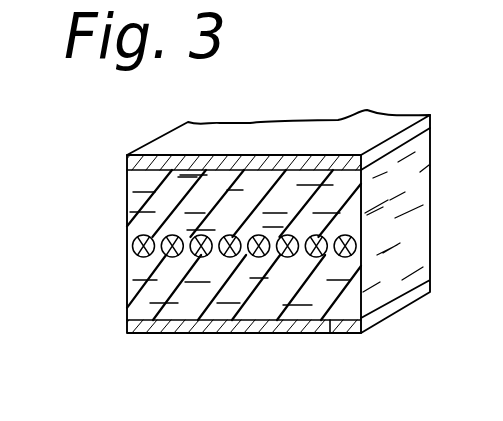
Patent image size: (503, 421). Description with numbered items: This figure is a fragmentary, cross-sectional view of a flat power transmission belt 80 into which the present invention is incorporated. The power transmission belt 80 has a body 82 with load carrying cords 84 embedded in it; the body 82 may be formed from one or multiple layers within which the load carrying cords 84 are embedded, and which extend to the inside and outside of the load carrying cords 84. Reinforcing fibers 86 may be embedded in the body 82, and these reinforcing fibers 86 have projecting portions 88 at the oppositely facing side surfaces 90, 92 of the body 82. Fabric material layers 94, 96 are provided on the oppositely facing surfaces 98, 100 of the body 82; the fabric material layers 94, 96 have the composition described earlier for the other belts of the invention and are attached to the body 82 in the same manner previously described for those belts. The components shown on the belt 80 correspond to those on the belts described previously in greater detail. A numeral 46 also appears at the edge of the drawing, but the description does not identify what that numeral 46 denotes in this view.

The light panel assembly 80 is at (396, 105).
The lower light-transmitting layer 82 is at (118, 281).
The optical fibers 84 is at (257, 257).
The upper light-transmitting layer 86 is at (127, 224).
The side reflective surface 88 is at (410, 210).
The top reflective layer 90 is at (126, 182).
The side wall 92 is at (420, 173).
The top surface 94 is at (263, 140).
The bottom reflective layer 96 is at (265, 334).
The adhesive layer 98 is at (290, 167).
The end portion of bottom layer 100 is at (329, 334).
The light source connector 46 is at (492, 56).